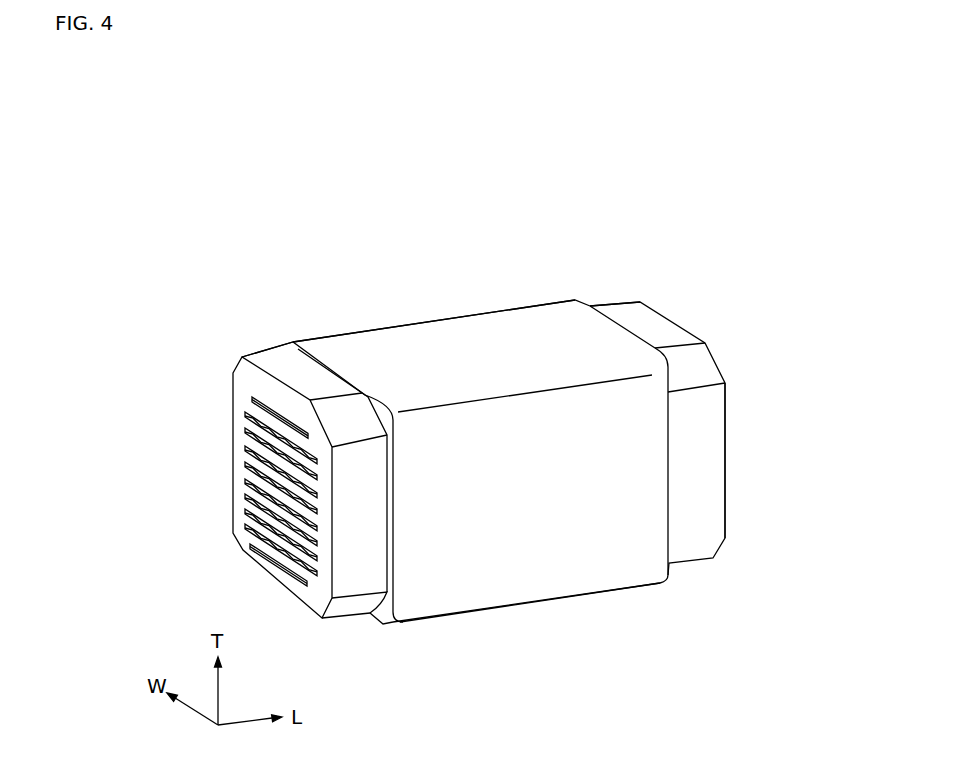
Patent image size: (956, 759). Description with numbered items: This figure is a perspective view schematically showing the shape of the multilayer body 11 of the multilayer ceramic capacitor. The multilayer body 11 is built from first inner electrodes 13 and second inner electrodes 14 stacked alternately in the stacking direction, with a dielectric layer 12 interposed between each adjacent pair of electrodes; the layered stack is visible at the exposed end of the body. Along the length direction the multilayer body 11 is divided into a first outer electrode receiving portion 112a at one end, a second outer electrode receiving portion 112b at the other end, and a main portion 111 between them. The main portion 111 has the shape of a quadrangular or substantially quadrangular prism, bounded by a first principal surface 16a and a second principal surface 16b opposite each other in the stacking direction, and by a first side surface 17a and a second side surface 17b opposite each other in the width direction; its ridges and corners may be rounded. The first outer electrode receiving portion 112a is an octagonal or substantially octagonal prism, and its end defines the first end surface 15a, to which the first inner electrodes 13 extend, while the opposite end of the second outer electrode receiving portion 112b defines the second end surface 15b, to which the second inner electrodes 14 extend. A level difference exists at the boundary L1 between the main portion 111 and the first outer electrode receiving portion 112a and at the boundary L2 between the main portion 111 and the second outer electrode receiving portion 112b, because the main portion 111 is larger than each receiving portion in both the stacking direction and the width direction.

The multilayer body 11 is at (266, 192).
The main portion 111 is at (448, 334).
The first outer electrode receiving portion 112a is at (285, 362).
The second outer electrode receiving portion 112b is at (626, 310).
The dielectric layer 12 is at (245, 486).
The first inner electrode 13 is at (250, 401).
The second inner electrode 14 is at (245, 419).
The first end surface 15a is at (267, 387).
The second end surface 15b is at (710, 462).
The first principal surface 16a is at (508, 327).
The second principal surface 16b is at (500, 587).
The first side surface 17a is at (390, 355).
The second side surface 17b is at (585, 555).
The boundary L1 is at (284, 330).
The boundary L2 is at (574, 292).